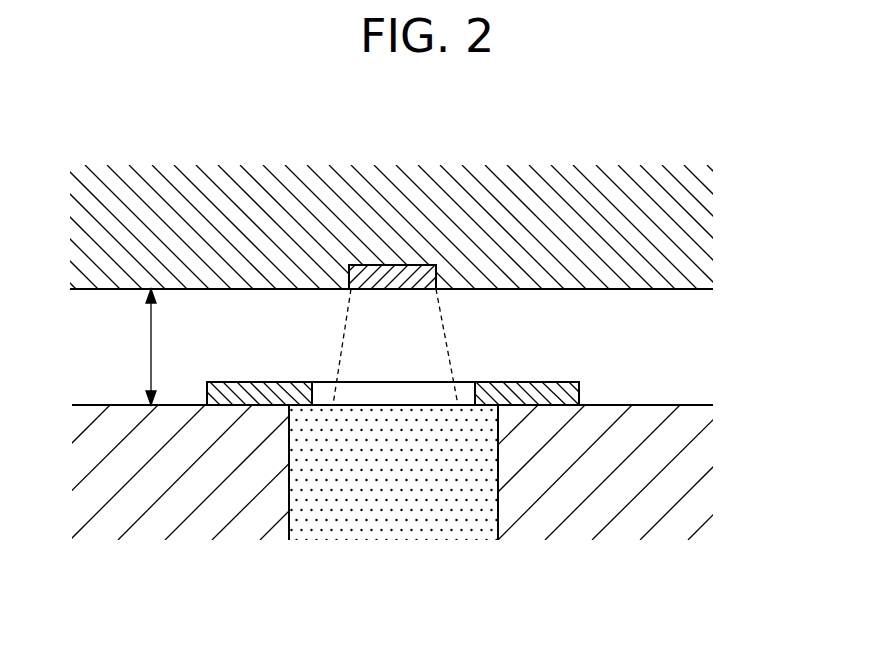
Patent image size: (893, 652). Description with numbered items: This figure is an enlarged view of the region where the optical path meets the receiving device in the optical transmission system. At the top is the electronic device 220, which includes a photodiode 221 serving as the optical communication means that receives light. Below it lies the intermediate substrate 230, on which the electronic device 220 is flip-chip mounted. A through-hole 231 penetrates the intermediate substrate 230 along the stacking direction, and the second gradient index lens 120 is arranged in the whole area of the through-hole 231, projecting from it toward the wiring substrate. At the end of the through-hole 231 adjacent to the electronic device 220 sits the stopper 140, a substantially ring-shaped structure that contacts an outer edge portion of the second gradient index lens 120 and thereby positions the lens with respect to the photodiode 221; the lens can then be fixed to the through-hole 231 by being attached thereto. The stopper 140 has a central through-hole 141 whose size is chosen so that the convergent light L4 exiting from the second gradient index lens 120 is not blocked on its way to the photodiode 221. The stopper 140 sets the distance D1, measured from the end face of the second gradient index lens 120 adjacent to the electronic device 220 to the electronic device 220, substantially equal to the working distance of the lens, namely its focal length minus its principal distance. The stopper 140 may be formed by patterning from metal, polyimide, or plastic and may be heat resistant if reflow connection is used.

The electronic device 220 is at (693, 225).
The photodiode 221 is at (437, 276).
The intermediate substrate 230 is at (577, 522).
The through-hole 231 is at (289, 487).
The second gradient index lens 120 is at (440, 532).
The stopper 140 is at (580, 393).
The central through-hole 141 is at (463, 394).
The convergent light L4 is at (345, 330).
The distance D1 is at (134, 347).